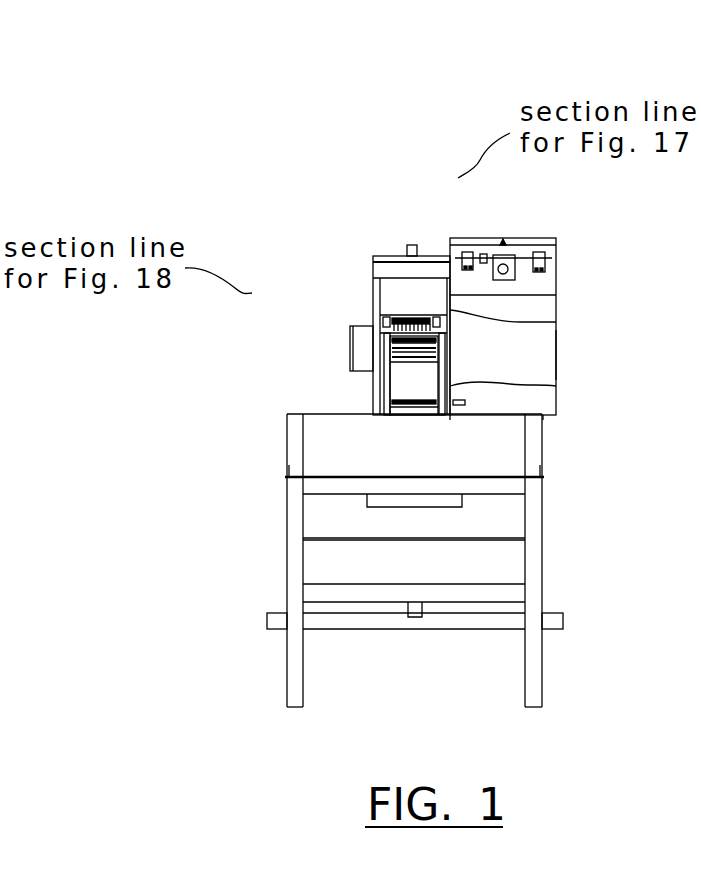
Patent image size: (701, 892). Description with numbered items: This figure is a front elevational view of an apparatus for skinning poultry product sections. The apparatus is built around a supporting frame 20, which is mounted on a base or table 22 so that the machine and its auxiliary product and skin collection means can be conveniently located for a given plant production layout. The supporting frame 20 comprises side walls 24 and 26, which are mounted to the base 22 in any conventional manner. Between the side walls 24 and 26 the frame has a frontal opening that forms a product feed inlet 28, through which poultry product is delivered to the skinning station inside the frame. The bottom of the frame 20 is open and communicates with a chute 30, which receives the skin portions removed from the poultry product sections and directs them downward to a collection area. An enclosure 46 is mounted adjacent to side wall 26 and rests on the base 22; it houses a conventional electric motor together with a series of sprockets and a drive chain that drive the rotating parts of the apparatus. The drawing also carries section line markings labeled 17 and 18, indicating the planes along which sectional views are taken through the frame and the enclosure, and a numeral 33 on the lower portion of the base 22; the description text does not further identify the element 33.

The section line for Fig. 17 is at (518, 450).
The section line for Fig. 18 is at (348, 395).
The supporting frame 20 is at (580, 258).
The base or table 22 is at (262, 484).
The side wall 24 is at (372, 306).
The side wall 26 is at (556, 322).
The product feed inlet 28 is at (440, 335).
The chute 30 is at (462, 504).
The lower panel 33 is at (505, 568).
The enclosure 46 is at (556, 352).